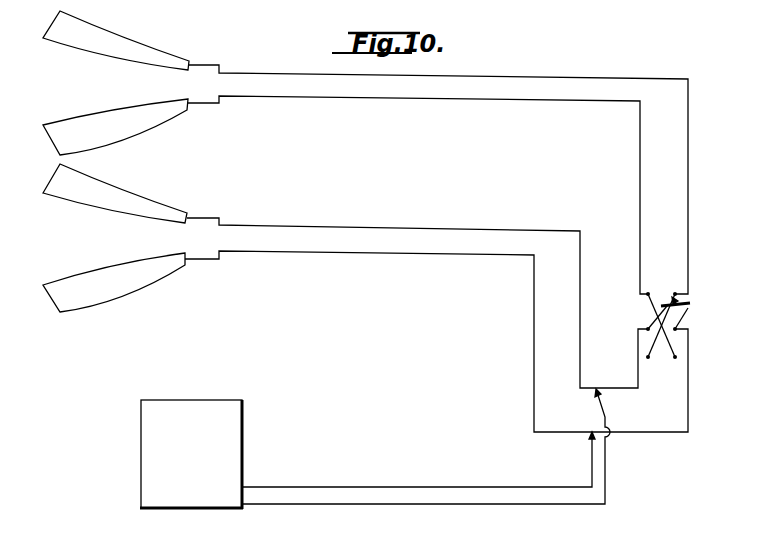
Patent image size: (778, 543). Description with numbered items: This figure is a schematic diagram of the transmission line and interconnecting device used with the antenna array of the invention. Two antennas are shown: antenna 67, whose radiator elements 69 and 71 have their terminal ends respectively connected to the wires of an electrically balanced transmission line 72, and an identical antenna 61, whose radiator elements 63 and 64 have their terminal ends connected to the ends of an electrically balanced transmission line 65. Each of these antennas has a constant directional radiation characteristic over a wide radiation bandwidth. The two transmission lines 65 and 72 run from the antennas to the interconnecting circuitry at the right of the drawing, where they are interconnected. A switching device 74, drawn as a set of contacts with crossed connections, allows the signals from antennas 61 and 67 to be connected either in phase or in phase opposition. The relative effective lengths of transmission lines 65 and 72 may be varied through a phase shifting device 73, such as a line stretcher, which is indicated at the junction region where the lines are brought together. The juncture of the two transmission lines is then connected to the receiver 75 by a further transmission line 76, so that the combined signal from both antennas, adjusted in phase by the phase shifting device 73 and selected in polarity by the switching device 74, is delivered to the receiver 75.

The antenna 61 is at (115, 238).
The radiator element 63 is at (170, 187).
The radiator element 64 is at (143, 236).
The electrically balanced transmission line 65 is at (339, 242).
The antenna 67 is at (116, 83).
The radiator element 69 is at (168, 36).
The radiator element 71 is at (138, 118).
The electrically balanced transmission line 72 is at (341, 88).
The phase shifting device 73 is at (612, 412).
The switching device 74 is at (688, 320).
The receiver 75 is at (144, 479).
The transmission line 76 is at (318, 487).